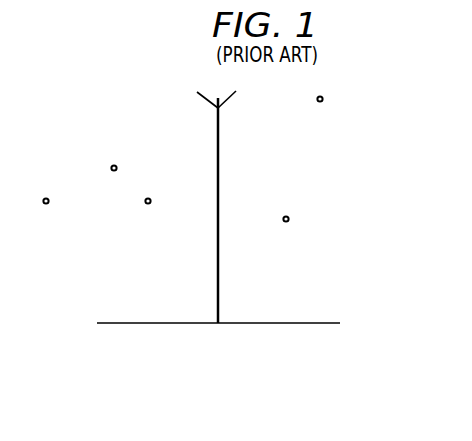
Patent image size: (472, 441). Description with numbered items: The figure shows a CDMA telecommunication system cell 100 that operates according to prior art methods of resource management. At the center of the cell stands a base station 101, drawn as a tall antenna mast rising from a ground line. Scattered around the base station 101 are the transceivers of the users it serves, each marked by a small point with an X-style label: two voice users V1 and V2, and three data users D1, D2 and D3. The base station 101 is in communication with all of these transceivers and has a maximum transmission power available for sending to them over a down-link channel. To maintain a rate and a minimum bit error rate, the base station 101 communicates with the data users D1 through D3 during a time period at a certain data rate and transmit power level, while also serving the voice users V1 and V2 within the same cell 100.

The CDMA telecommunication system cell 100 is at (398, 93).
The base station 101 is at (219, 193).
The data user D1 is at (111, 185).
The data user D2 is at (41, 218).
The data user D3 is at (282, 235).
The voice user V1 is at (315, 115).
The voice user V2 is at (144, 218).